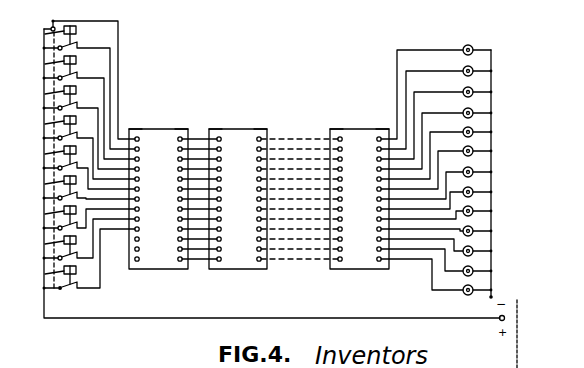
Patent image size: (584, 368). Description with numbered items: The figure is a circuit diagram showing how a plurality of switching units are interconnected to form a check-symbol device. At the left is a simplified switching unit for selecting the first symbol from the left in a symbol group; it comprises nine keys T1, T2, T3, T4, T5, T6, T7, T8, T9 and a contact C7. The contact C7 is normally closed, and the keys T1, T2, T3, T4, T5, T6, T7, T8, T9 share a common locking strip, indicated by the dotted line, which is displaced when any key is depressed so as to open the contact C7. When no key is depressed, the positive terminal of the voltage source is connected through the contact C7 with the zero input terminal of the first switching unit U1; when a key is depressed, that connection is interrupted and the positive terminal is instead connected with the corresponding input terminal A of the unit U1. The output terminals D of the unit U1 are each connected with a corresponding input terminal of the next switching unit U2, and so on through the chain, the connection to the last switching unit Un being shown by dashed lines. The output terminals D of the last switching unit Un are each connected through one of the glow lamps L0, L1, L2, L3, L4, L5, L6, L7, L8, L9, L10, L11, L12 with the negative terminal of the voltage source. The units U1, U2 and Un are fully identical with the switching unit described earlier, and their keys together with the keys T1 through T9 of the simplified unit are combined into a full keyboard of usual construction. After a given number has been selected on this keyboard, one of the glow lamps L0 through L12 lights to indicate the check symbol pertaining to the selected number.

The contact C7 is at (52, 21).
The key T1 is at (45, 34).
The key T2 is at (45, 64).
The key T3 is at (45, 94).
The key T4 is at (45, 124).
The key T5 is at (45, 154).
The key T6 is at (45, 184).
The key T7 is at (45, 214).
The key T8 is at (45, 244).
The key T9 is at (45, 274).
The input terminal A is at (135, 128).
The output terminals D is at (184, 128).
The switching unit U1 is at (161, 131).
The switching unit U2 is at (243, 131).
The last switching unit Un is at (364, 131).
The glow lamp L0 is at (462, 47).
The glow lamp L1 is at (462, 69).
The glow lamp L2 is at (462, 90).
The glow lamp L3 is at (462, 111).
The glow lamp L4 is at (462, 131).
The glow lamp L5 is at (462, 150).
The glow lamp L6 is at (462, 171).
The glow lamp L7 is at (462, 191).
The glow lamp L8 is at (474, 208).
The glow lamp L9 is at (474, 228).
The glow lamp L10 is at (474, 248).
The glow lamp L11 is at (474, 268).
The glow lamp L12 is at (474, 287).